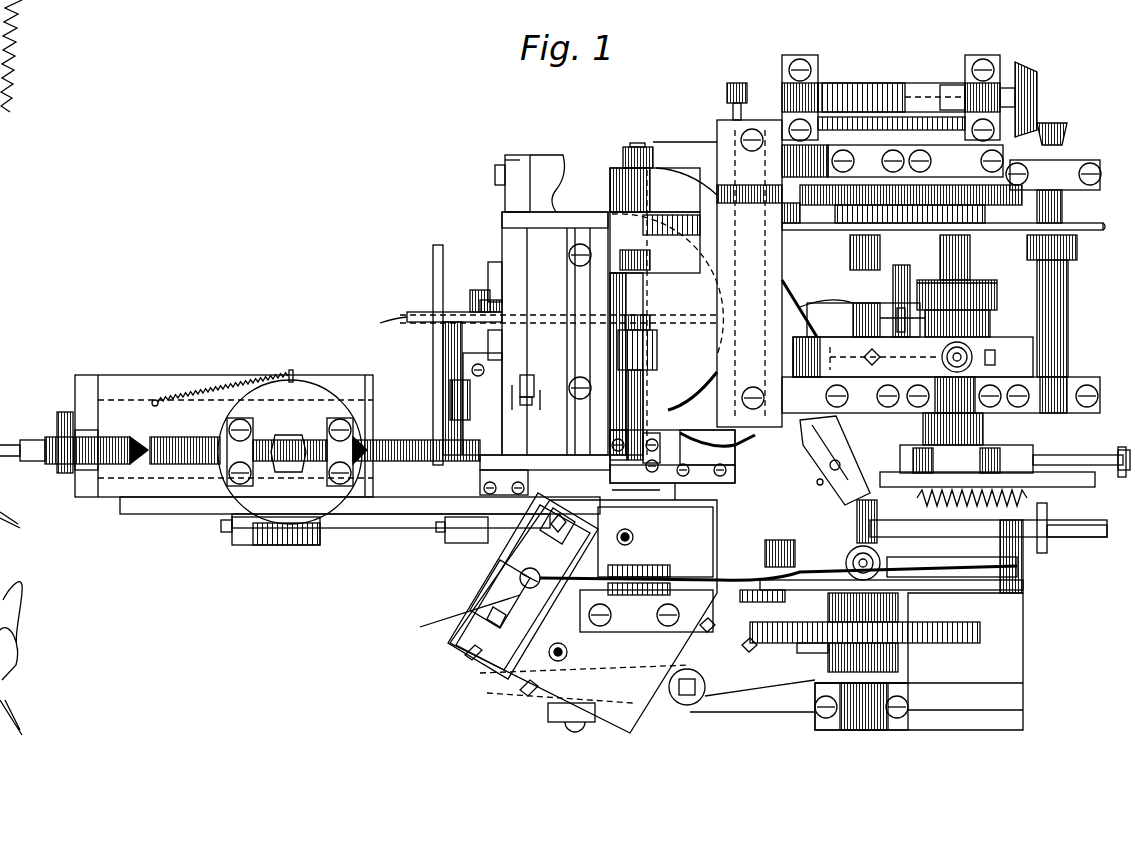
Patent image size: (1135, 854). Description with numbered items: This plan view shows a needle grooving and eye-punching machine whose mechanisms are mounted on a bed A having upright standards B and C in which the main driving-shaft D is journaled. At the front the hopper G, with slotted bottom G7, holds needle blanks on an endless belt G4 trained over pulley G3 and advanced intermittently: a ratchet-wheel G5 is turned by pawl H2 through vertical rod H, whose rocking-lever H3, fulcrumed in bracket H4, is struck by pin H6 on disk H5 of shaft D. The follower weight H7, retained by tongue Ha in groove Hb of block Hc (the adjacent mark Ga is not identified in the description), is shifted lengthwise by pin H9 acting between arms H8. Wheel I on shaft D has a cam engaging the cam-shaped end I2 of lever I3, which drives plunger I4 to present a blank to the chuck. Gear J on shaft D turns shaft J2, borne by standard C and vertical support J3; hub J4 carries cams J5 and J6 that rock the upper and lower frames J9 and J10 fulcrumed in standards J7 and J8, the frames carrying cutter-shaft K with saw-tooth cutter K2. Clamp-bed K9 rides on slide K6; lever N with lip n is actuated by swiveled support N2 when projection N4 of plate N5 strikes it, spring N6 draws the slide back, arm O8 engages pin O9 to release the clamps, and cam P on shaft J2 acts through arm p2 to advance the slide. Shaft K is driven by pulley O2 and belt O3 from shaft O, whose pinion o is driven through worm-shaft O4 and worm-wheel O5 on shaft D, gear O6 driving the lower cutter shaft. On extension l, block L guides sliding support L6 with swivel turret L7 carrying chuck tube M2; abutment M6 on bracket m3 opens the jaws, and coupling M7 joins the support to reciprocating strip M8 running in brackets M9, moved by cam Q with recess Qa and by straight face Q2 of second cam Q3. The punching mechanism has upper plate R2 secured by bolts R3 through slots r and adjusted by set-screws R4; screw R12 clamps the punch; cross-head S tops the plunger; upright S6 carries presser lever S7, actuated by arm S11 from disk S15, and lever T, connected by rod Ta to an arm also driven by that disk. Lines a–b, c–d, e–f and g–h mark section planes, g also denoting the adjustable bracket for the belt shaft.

The base-plate or bed A is at (919, 661).
The upright standard B is at (965, 718).
The upright standard C is at (960, 120).
The main driving-shaft D is at (850, 250).
The needle-feed box or hopper G is at (542, 183).
The pulley G3 is at (500, 185).
The endless blank feeder or belt G4 is at (503, 200).
The ratchet-wheel G5 is at (448, 420).
The bottom of hopper G7 is at (555, 333).
The pin Ga is at (533, 388).
The vertical rod H is at (415, 312).
The pivotal pawl or dog H2 is at (433, 362).
The rocking-lever H3 is at (720, 330).
The bracket H4 is at (438, 355).
The wheel or disk H5 is at (914, 321).
The laterally projecting pin H6 is at (893, 315).
The removable weight or follower H7 is at (501, 299).
The arms H8 is at (505, 305).
The pin H9 is at (478, 290).
The tongue Ha is at (532, 374).
The groove Hb is at (542, 409).
The block Hc is at (514, 407).
The wheel I is at (936, 622).
The cam-shaped end of lever I2 is at (828, 665).
The lever I3 is at (742, 690).
The reciprocating rod or plunger I4 is at (503, 565).
The gear-wheel J is at (902, 175).
The shaft J2 is at (970, 252).
The vertical support J3 is at (972, 360).
The hub J4 is at (990, 318).
The peripheral cam J5 is at (957, 287).
The peripheral cam J6 is at (980, 360).
The standard J7 is at (749, 255).
The standard J8 is at (941, 395).
The upper rocking-frame J9 is at (912, 357).
The lower rocking-frame J10 is at (817, 306).
The cutter-carrying shaft K is at (655, 348).
The saw-tooth cutter K2 is at (545, 475).
The slide K6 is at (790, 470).
The clamp-bed or block K9 is at (672, 426).
The block or stock L is at (165, 514).
The sliding support L6 is at (74, 437).
The circular head or turret L7 is at (290, 452).
The cylindrical tube or chuck M2 is at (185, 437).
The buffer or abutment M6 is at (170, 478).
The detachable coupling device M7 is at (258, 545).
The metallic strip M8 is at (372, 528).
The brackets M9 is at (445, 535).
The bracket m3 is at (63, 412).
The lever N is at (717, 427).
The swiveled support N2 is at (850, 470).
The projection N4 is at (756, 505).
The plate N5 is at (1045, 548).
The spring N6 is at (1040, 505).
The lip n is at (800, 420).
The shaft O is at (1057, 306).
The double-grooved pulley O2 is at (620, 215).
The driving-belt O3 is at (794, 215).
The worm-shaft O4 is at (905, 83).
The worm-wheel O5 is at (930, 85).
The gear O6 is at (657, 355).
The arm O8 is at (820, 483).
The pin O9 is at (830, 500).
The pinion o is at (1054, 127).
The cam P is at (1070, 459).
The arm p2 is at (1060, 487).
The cam Q is at (851, 521).
The recess Qa is at (848, 505).
The straight acting face Q2 is at (988, 522).
The second cam Q3 is at (900, 552).
The upper plate R2 is at (583, 616).
The bolts R3 is at (634, 535).
The set-screws R4 is at (716, 618).
The screw R12 is at (520, 587).
The slots r is at (576, 653).
The cross-head S is at (711, 604).
The upright S6 is at (646, 569).
The lever S7 is at (762, 600).
The arm S11 is at (891, 558).
The wheel or disk S15 is at (752, 577).
The lever T is at (761, 559).
The rod Ta is at (846, 607).
The section line a is at (485, 553).
The section line b is at (593, 605).
The section line c is at (639, 147).
The section line d is at (645, 491).
The section line e is at (628, 312).
The section line f is at (640, 373).
The bracket g is at (291, 570).
The section line h is at (286, 525).
The extension l is at (370, 422).